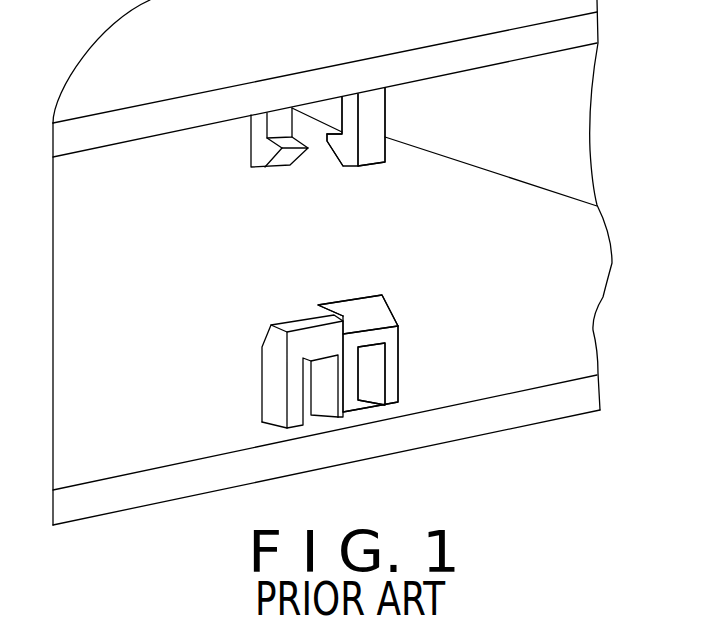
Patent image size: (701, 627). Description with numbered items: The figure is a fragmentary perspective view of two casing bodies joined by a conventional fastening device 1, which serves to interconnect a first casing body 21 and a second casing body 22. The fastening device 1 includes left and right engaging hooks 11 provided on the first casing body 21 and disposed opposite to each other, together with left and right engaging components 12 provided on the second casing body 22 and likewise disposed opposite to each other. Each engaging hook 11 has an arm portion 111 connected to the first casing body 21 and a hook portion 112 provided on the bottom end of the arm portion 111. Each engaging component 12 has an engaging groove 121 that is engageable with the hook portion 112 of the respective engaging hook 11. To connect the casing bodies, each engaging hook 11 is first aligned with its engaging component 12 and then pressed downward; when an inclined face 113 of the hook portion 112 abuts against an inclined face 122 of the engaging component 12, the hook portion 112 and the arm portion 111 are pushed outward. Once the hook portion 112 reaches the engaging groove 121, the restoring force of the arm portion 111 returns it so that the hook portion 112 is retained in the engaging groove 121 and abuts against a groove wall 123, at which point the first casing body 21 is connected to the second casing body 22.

The fastening device 1 is at (230, 143).
The engaging hook 11 is at (242, 162).
The arm portion 111 is at (369, 117).
The hook portion 112 is at (328, 132).
The inclined face 113 is at (342, 161).
The engaging component 12 is at (253, 354).
The engaging groove 121 is at (370, 376).
The inclined face 122 is at (382, 316).
The groove wall 123 is at (367, 348).
The first casing body 21 is at (458, 72).
The second casing body 22 is at (457, 441).